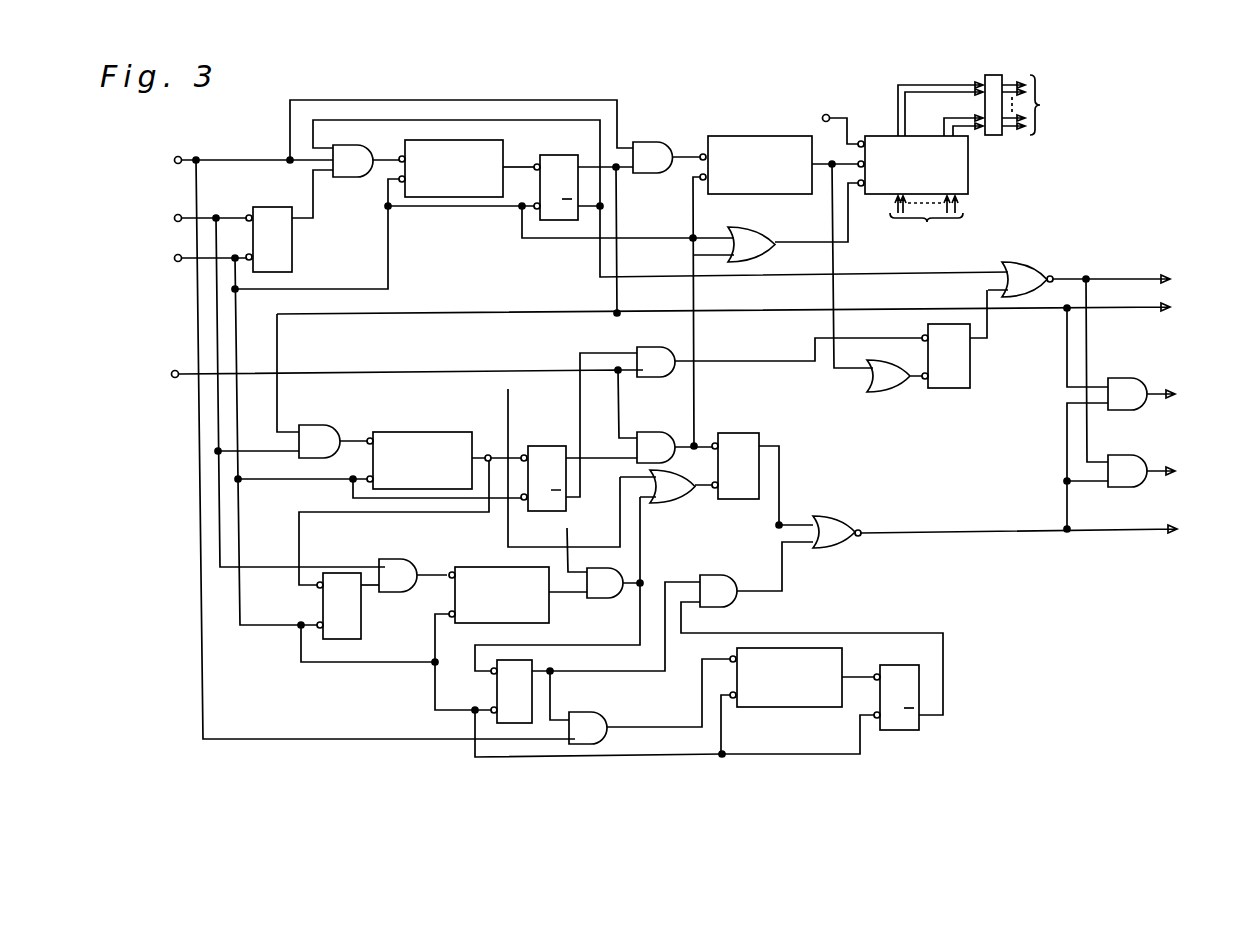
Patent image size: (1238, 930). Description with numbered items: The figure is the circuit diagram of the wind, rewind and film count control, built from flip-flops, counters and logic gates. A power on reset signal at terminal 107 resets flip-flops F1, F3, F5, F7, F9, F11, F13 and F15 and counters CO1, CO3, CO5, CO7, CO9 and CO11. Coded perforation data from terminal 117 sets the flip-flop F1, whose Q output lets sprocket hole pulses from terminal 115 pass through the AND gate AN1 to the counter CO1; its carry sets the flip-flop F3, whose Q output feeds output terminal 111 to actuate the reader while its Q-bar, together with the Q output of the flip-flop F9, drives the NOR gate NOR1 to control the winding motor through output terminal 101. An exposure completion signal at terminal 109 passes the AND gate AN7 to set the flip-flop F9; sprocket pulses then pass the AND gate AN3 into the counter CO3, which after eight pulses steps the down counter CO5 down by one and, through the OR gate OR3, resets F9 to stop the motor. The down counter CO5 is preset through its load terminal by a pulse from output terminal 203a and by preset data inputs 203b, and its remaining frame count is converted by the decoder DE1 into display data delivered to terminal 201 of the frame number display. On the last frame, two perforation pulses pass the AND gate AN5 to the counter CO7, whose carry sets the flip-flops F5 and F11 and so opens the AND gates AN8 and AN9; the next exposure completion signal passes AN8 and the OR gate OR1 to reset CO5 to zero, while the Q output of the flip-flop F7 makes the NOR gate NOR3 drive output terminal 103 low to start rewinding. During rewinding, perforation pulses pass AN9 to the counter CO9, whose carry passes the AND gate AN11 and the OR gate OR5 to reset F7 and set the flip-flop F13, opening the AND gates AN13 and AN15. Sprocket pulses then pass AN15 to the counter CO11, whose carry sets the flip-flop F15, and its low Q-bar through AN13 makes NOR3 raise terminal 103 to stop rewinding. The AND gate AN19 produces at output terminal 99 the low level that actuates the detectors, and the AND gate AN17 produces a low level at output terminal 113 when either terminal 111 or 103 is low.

The terminal of sprocket hole detector 115 is at (349, 443).
The terminal of coded perforation detector 117 is at (254, 386).
The power on reset terminal 107 is at (428, 422).
The exposure completion signal terminal 109 is at (383, 399).
The output terminal 101 is at (1140, 281).
The output terminal 111 is at (753, 310).
The output terminal 113 is at (1188, 394).
The output terminal 99 is at (1181, 472).
The output terminal 103 is at (1046, 531).
The AND gate AN1 is at (348, 177).
The flip-flop F1 is at (292, 245).
The counter CO1 is at (465, 150).
The flip-flop F3 is at (562, 155).
The AND gate AN3 is at (653, 142).
The binary counter CO3 is at (753, 136).
The output terminal 203a is at (827, 115).
The down counter CO5 is at (968, 172).
The decoder DE1 is at (993, 135).
The terminal of frame number display 201 is at (1060, 105).
The input lines 203b is at (926, 224).
The OR gate OR1 is at (750, 235).
The NOR gate NOR1 is at (1022, 272).
The AND gate AN7 is at (655, 347).
The AND gate AN8 is at (660, 432).
The flip-flop F5 is at (543, 446).
The flip-flop F7 is at (738, 433).
The OR gate OR3 is at (885, 392).
The flip-flop F9 is at (957, 388).
The AND gate AN17 is at (1127, 378).
The AND gate AN19 is at (1133, 442).
The AND gate AN5 is at (320, 425).
The binary counter CO7 is at (425, 432).
The AND gate AN9 is at (395, 559).
The counter CO9 is at (475, 567).
The AND gate AN11 is at (597, 598).
The flip-flop F11 is at (357, 619).
The OR gate OR5 is at (593, 530).
The AND gate AN13 is at (722, 575).
The NOR gate NOR3 is at (830, 548).
The AND gate AN15 is at (593, 712).
The binary counter CO11 is at (790, 707).
The flip-flop F13 is at (522, 723).
The flip-flop F15 is at (897, 730).